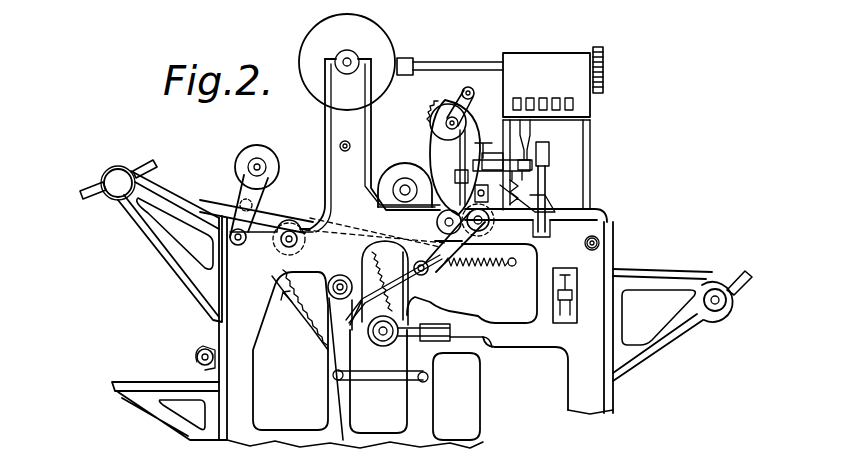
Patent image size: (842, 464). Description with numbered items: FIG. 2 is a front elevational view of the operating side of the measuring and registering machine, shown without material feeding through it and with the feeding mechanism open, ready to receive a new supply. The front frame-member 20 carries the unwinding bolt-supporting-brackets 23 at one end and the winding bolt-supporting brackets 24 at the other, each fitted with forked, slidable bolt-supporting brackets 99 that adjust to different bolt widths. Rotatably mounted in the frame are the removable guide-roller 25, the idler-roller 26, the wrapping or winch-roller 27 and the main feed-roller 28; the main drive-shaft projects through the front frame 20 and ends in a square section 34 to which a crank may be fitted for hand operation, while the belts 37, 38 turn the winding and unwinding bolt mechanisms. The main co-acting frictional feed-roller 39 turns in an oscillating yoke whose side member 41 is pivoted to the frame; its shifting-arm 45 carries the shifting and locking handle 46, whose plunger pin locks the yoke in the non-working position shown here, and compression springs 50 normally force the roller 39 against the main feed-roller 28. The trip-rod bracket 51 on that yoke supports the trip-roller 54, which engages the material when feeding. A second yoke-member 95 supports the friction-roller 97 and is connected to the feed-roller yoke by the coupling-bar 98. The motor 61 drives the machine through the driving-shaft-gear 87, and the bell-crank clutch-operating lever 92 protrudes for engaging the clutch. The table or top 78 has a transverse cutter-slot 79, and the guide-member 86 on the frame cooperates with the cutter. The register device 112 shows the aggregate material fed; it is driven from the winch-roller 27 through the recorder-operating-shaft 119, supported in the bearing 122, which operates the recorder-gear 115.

The front frame-member 20 is at (340, 122).
The unwinding bolt-supporting-brackets 23 is at (180, 272).
The winding bolt-supporting brackets 24 is at (652, 352).
The removable guide-roller 25 is at (194, 353).
The idler-roller 26 is at (280, 250).
The wrapping or winch-roller 27 is at (312, 38).
The main feed-roller 28 is at (399, 170).
The square section 34 is at (340, 275).
The belt 37 is at (680, 270).
The belt 38 is at (177, 190).
The main co-acting frictional feed-roller 39 is at (432, 128).
The side member of yoke-member 41 is at (452, 190).
The shifting-arm 45 is at (447, 268).
The shifting and locking handle 46 is at (423, 276).
The compression springs 50 is at (480, 271).
The trip-rod bracket 51 is at (458, 103).
The trip-roller 54 is at (472, 91).
The motor 61 is at (360, 350).
The table or top 78 is at (590, 214).
The transverse cutter-slot 79 is at (575, 248).
The guide-member 86 is at (556, 188).
The driving-shaft-gear 87 is at (300, 318).
The clutch-operating lever 92 is at (490, 346).
The yoke-member 95 is at (243, 190).
The friction-roller 97 is at (243, 152).
The coupling-bar 98 is at (290, 213).
The bolt-supporting brackets 99 is at (90, 185).
The register device 112 is at (536, 72).
The recorder-gear 115 is at (605, 85).
The recorder-operating-shaft 119 is at (456, 65).
The bearing 122 is at (405, 57).